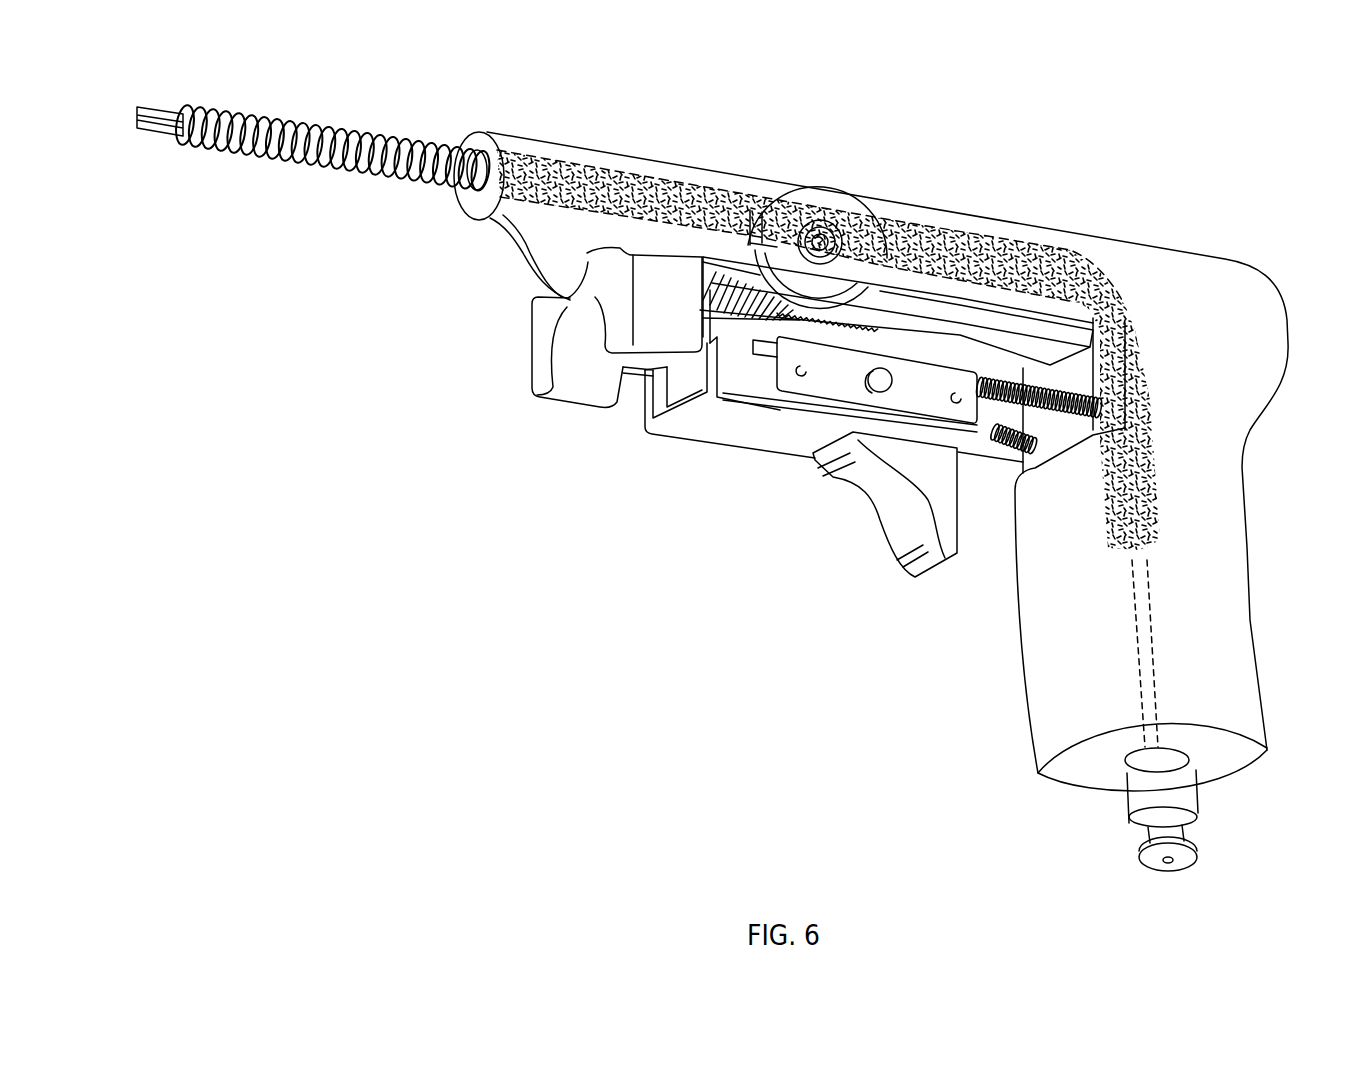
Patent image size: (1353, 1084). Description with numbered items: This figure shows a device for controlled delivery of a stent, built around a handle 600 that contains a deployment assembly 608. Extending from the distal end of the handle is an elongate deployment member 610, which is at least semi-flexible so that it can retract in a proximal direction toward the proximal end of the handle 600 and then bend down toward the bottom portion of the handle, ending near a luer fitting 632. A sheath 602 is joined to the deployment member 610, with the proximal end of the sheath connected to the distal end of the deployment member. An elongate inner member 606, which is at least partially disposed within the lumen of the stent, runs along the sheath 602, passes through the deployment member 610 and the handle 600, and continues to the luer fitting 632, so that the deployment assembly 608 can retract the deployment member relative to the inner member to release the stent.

The handle 600 is at (1162, 243).
The sheath 602 is at (163, 104).
The elongate inner member 606 is at (147, 104).
The deployment assembly 608 is at (630, 424).
The elongate deployment member 610 is at (324, 124).
The luer fitting 632 is at (1200, 803).